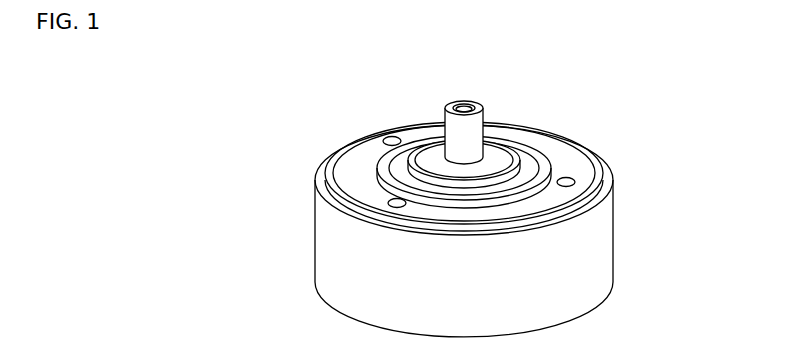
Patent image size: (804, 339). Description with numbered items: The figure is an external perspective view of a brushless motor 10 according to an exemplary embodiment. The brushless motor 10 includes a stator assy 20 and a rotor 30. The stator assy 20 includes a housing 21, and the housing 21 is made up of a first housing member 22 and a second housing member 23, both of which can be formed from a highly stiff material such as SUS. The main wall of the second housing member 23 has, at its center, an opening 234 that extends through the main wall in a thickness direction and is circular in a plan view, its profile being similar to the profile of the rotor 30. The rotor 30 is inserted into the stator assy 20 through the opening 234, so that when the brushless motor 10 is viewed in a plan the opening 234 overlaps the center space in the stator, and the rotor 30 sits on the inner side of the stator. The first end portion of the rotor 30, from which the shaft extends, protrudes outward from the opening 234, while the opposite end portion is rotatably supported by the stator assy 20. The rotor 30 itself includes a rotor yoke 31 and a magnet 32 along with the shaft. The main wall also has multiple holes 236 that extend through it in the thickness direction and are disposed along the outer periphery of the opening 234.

The brushless motor 10 is at (613, 73).
The stator assy 20 is at (498, 221).
The housing 21 is at (511, 229).
The first housing member 22 is at (606, 217).
The second housing member 23 is at (603, 173).
The rotor 30 is at (471, 125).
The rotor yoke 31 is at (447, 119).
The magnet 32 is at (403, 165).
The opening 234 is at (528, 162).
The holes 236 is at (388, 198).